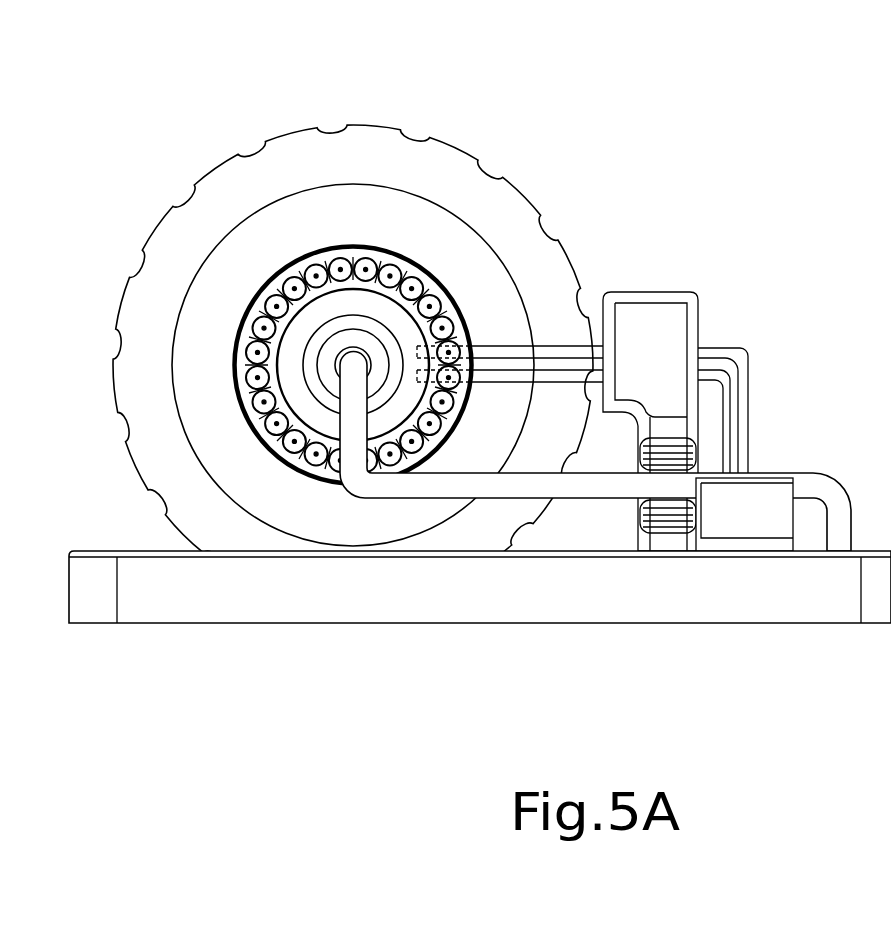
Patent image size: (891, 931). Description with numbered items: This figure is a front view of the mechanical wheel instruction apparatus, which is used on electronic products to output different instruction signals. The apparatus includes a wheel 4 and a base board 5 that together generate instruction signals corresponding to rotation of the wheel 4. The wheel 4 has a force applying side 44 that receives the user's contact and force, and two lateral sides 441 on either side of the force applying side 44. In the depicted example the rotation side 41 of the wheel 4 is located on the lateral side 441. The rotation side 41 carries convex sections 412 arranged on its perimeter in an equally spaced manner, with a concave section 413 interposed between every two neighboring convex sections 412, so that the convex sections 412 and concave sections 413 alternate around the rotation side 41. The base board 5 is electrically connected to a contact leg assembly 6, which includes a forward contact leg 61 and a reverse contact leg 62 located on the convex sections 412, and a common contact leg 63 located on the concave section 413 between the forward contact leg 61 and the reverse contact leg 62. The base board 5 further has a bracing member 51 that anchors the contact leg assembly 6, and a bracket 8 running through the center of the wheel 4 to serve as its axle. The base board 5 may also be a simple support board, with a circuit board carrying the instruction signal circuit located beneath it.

The wheel 4 is at (353, 328).
The rotation side 41 is at (410, 277).
The convex section 412 is at (340, 268).
The concave section 413 is at (384, 262).
The force applying side 44 is at (256, 155).
The lateral side 441 is at (230, 243).
The base board 5 is at (364, 609).
The bracing member 51 is at (660, 322).
The contact leg assembly 6 is at (766, 364).
The forward contact leg 61 is at (728, 434).
The reverse contact leg 62 is at (752, 387).
The common contact leg 63 is at (715, 365).
The bracket 8 is at (838, 514).